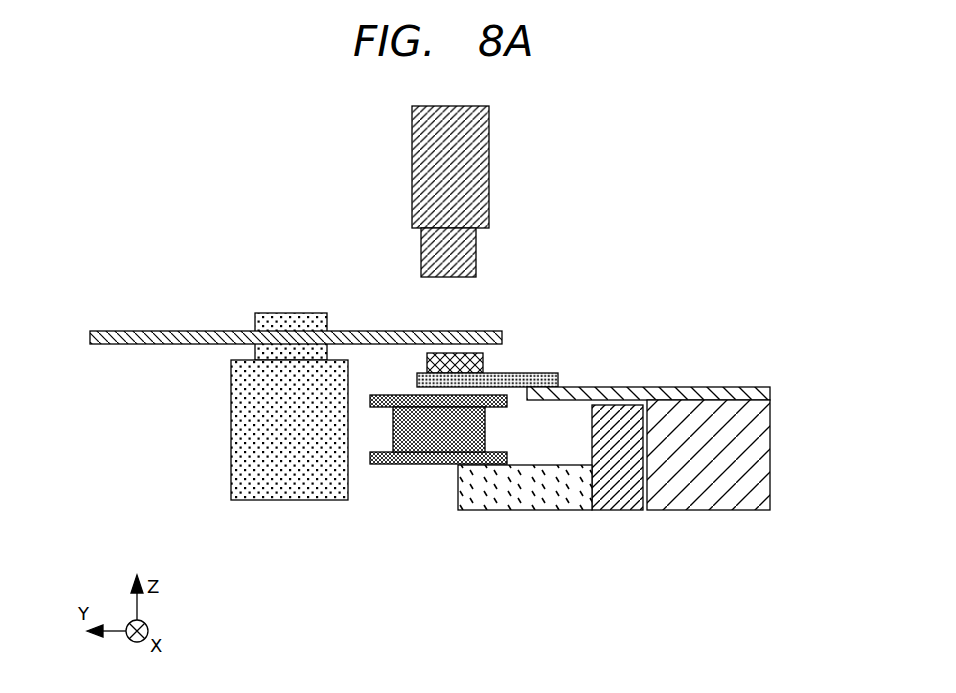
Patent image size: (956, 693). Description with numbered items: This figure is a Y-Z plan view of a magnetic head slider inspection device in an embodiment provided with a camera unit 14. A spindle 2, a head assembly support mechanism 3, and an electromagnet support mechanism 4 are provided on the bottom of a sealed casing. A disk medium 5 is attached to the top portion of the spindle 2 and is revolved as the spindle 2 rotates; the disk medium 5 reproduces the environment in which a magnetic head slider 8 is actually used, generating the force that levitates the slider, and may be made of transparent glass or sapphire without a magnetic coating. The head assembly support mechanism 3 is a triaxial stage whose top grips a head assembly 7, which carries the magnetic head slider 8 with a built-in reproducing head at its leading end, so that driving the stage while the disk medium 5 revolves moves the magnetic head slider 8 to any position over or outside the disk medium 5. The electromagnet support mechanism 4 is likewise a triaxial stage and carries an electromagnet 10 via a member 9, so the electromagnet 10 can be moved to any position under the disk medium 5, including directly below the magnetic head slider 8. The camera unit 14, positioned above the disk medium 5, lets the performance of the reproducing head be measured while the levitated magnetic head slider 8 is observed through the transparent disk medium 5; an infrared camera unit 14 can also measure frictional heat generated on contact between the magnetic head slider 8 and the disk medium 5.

The spindle 2 is at (240, 427).
The head assembly support mechanism 3 is at (762, 490).
The electromagnet support mechanism 4 is at (618, 502).
The disk medium 5 is at (103, 330).
The head assembly 7 is at (522, 386).
The magnetic head slider 8 is at (427, 362).
The member 9 is at (528, 503).
The electromagnet 10 is at (427, 443).
The camera unit 14 is at (482, 163).